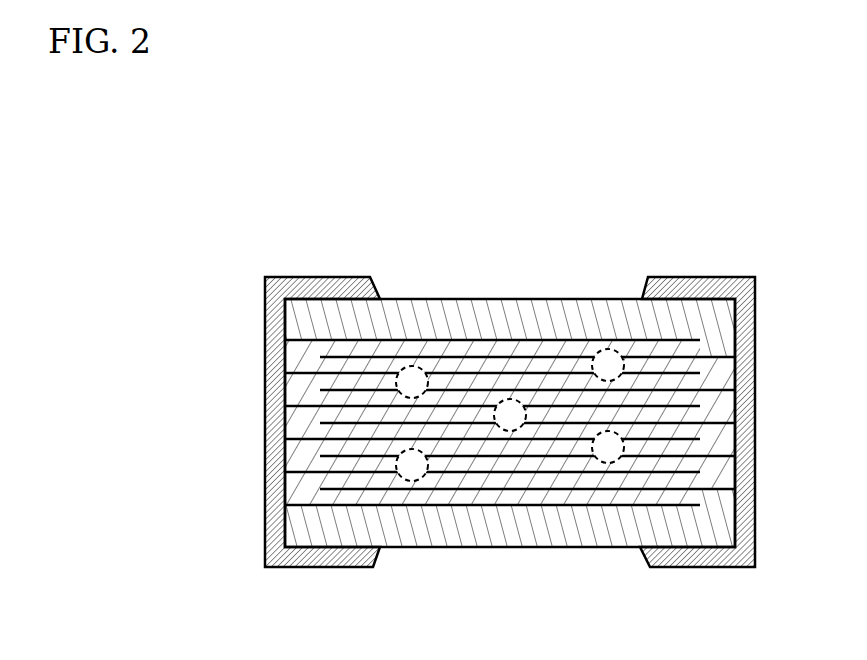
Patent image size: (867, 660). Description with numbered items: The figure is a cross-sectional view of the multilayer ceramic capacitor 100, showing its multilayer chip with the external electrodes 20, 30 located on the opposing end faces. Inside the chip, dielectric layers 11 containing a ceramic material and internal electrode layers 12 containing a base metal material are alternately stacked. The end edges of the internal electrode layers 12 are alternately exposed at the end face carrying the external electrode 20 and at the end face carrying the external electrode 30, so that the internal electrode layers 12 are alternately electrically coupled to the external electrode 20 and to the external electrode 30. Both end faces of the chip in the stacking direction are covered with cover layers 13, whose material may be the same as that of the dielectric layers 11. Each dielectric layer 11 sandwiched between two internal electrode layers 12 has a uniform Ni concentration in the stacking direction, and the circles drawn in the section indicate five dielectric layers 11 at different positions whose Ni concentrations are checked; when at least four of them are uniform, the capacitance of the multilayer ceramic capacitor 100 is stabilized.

The multilayer ceramic capacitor 100 is at (679, 237).
The dielectric layer 11 is at (600, 478).
The internal electrode layer 12 is at (497, 458).
The cover layer 13 is at (432, 310).
The external electrode 20 is at (293, 292).
The external electrode 30 is at (727, 292).